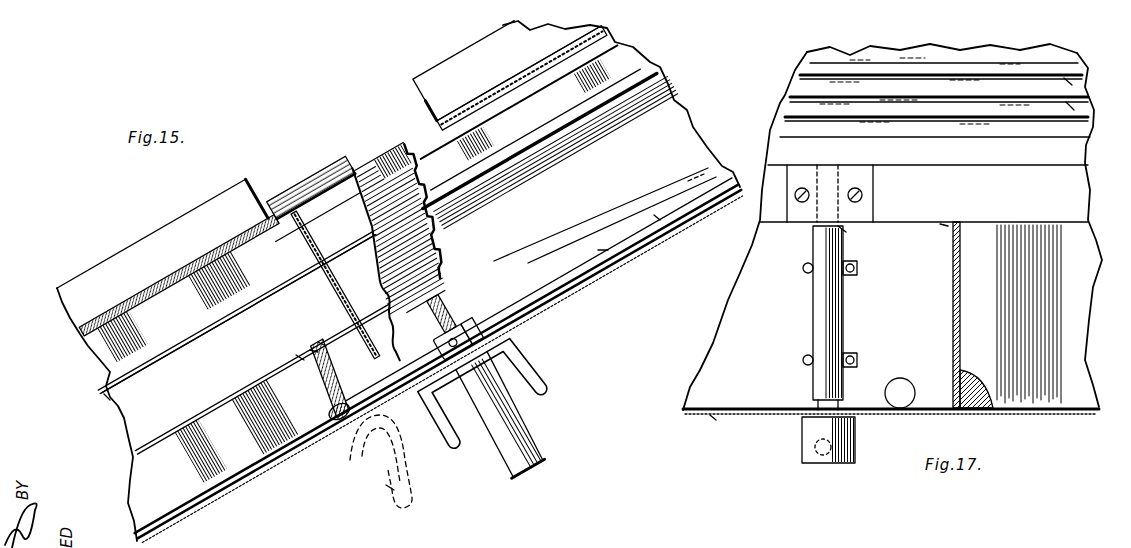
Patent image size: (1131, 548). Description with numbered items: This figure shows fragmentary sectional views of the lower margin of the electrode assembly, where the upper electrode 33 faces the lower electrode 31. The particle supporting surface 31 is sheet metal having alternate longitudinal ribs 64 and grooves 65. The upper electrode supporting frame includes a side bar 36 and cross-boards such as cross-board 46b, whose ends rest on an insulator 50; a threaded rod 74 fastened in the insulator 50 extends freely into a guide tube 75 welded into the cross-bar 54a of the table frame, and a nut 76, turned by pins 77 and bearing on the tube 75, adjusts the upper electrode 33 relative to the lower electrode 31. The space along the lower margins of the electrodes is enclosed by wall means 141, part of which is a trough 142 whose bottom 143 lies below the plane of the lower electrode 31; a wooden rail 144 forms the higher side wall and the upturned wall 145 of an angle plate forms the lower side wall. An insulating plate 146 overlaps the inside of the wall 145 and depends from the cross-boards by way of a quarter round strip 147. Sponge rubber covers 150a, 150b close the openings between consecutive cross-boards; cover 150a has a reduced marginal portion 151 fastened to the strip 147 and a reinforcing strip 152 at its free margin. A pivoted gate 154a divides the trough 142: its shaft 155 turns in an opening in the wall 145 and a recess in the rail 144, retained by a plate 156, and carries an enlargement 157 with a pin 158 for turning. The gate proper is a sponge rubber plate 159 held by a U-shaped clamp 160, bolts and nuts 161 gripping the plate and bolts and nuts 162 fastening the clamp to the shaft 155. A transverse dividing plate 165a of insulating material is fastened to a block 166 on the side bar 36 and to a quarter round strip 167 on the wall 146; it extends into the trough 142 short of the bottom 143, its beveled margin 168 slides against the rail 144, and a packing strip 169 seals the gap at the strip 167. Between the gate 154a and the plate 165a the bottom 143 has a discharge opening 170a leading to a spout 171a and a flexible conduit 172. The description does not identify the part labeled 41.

In FIG. 15, the particle supporting surface 31 is at (218, 397).
In FIG. 17, the particle supporting surface 31 is at (812, 67).
In FIG. 15, the upper electrode 33 is at (162, 368).
In FIG. 15, the side bar 36 is at (200, 314).
In FIG. 17, the side bar 36 is at (774, 148).
In FIG. 15, the side wall 41 is at (108, 397).
In FIG. 15, the cross-board 46b is at (287, 184).
In FIG. 15, the insulator 50 is at (443, 242).
In FIG. 15, the cross-bar 54a is at (534, 370).
In FIG. 17, the ribs 64 is at (1068, 82).
In FIG. 17, the grooves 65 is at (1070, 106).
In FIG. 15, the threaded rod 74 is at (450, 318).
In FIG. 15, the guide tube 75 is at (527, 440).
In FIG. 15, the nut 76 is at (474, 335).
In FIG. 15, the pin 77 is at (478, 320).
In FIG. 15, the wall means 141 is at (684, 100).
In FIG. 15, the trough 142 is at (603, 252).
In FIG. 17, the bottom 143 is at (697, 389).
In FIG. 15, the rail 144 is at (167, 450).
In FIG. 17, the rail 144 is at (997, 178).
In FIG. 15, the wall 145 is at (657, 218).
In FIG. 17, the wall 145 is at (713, 418).
In FIG. 15, the plate 146 is at (633, 62).
In FIG. 15, the quarter round strip 147 is at (518, 96).
In FIG. 15, the cover 150a is at (190, 252).
In FIG. 15, the cover 150b is at (513, 74).
In FIG. 15, the reduced marginal portion 151 is at (458, 112).
In FIG. 15, the reinforcing strip 152 is at (125, 250).
In FIG. 15, the gate 154a is at (310, 402).
In FIG. 17, the gate 154a is at (811, 331).
In FIG. 15, the shaft 155 is at (314, 350).
In FIG. 17, the shaft 155 is at (842, 229).
In FIG. 15, the plate 156 is at (300, 357).
In FIG. 17, the plate 156 is at (868, 186).
In FIG. 17, the enlargement 157 is at (852, 437).
In FIG. 17, the pin 158 is at (838, 468).
In FIG. 15, the plate 159 is at (320, 435).
In FIG. 15, the U-shaped clamp 160 is at (322, 368).
In FIG. 15, the bolts and nuts 161 is at (337, 393).
In FIG. 15, the bolts and nuts 162 is at (322, 343).
In FIG. 17, the bolts and nuts 162 is at (864, 268).
In FIG. 15, the dividing plate 165a is at (318, 286).
In FIG. 17, the dividing plate 165a is at (954, 286).
In FIG. 15, the block 166 is at (300, 236).
In FIG. 17, the quarter round strip 167 is at (990, 389).
In FIG. 17, the margin 168 is at (943, 226).
In FIG. 17, the packing strip 169 is at (964, 376).
In FIG. 17, the discharge opening 170a is at (894, 384).
In FIG. 15, the spout 171a is at (371, 461).
In FIG. 15, the flexible conduit 172 is at (390, 488).